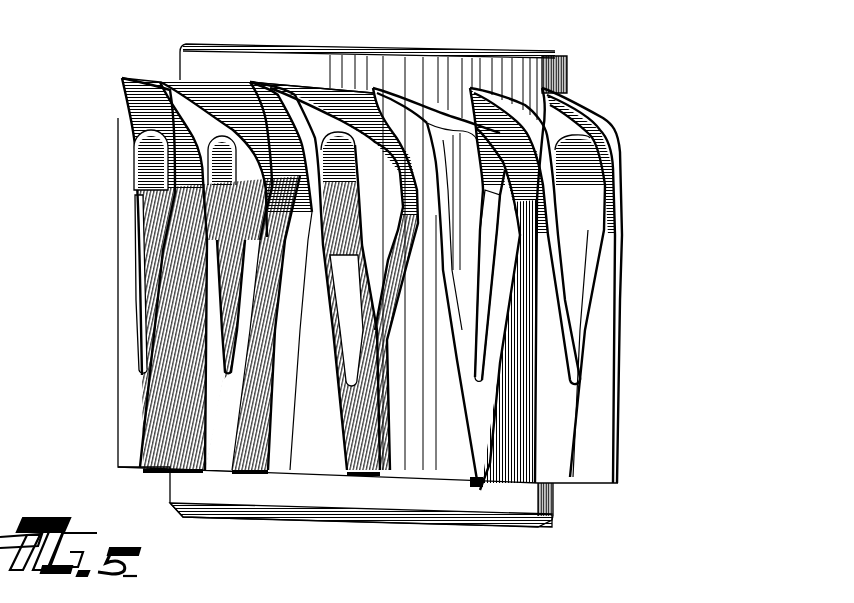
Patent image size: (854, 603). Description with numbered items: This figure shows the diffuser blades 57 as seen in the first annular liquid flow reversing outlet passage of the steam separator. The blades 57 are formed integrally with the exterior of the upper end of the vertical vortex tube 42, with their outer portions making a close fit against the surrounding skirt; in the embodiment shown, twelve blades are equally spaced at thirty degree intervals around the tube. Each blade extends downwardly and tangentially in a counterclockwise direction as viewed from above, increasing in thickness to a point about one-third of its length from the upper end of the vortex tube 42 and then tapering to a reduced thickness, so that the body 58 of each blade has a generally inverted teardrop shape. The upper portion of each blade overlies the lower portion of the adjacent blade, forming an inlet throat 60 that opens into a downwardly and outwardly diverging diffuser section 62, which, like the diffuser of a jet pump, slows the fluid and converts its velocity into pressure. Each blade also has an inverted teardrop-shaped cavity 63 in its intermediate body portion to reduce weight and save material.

The vertical vortex tube 42 is at (572, 78).
The diffuser blades 57 is at (232, 92).
The body of the blade 58 is at (333, 390).
The inlet throat 60 is at (355, 96).
The diffuser section 62 is at (436, 340).
The inverted teardrop-shaped cavity 63 is at (227, 178).